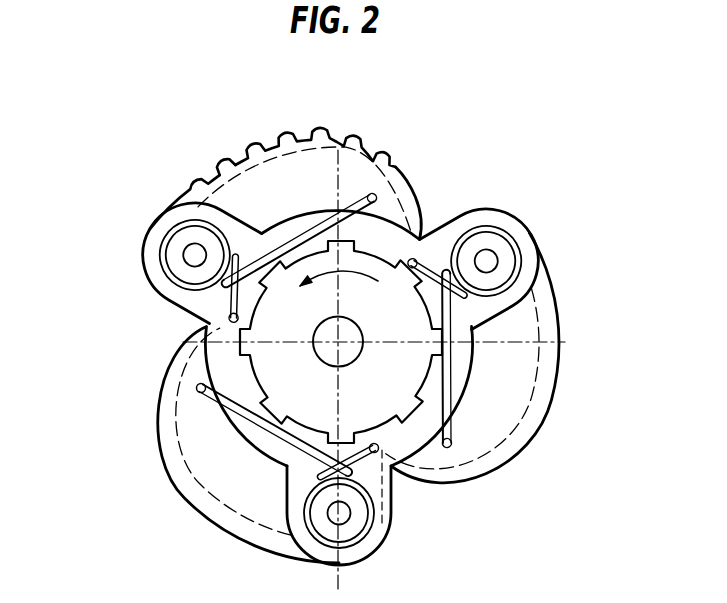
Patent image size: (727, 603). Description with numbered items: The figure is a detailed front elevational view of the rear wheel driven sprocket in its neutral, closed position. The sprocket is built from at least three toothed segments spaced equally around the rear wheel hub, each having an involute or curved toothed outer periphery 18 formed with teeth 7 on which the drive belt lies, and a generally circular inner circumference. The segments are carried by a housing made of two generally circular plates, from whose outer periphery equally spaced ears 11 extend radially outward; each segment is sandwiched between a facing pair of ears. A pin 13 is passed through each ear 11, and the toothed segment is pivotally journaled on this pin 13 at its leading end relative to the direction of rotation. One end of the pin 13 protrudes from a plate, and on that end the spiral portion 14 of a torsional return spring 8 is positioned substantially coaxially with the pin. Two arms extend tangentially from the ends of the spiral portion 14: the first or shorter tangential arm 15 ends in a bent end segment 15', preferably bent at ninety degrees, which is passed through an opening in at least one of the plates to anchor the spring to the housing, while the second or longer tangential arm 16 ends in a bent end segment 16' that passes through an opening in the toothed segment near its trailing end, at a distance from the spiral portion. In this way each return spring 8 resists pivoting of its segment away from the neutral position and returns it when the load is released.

The teeth 7 is at (273, 148).
The sprocket tooth 18 is at (237, 163).
The return spring 8 is at (452, 368).
The ear 11 is at (489, 232).
The pin 13 is at (193, 257).
The spiral portion 14 is at (514, 233).
The first tangential arm 15 is at (423, 290).
The bent end segment 15' is at (434, 201).
The second tangential arm 16 is at (496, 355).
The bent end segment 16' is at (535, 442).